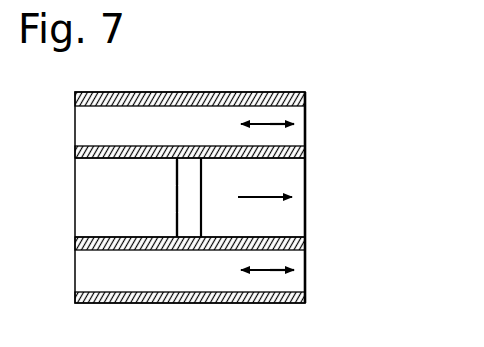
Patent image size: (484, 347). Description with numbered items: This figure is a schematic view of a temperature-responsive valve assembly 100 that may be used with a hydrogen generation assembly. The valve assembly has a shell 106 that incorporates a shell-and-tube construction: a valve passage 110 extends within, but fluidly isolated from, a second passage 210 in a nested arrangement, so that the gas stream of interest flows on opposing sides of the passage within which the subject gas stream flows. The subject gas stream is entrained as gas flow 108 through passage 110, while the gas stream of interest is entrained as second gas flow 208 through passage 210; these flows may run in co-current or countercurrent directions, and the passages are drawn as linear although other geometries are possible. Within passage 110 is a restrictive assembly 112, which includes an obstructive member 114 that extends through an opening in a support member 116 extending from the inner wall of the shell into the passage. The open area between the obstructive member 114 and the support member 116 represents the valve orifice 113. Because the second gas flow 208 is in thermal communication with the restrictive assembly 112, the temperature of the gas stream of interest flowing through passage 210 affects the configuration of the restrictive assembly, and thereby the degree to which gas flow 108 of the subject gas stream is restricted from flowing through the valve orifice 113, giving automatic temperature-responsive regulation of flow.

The temperature-responsive valve assembly 100 is at (319, 64).
The shell 106 is at (228, 89).
The gas flow 108 is at (271, 196).
The valve passage 110 is at (288, 213).
The restrictive assembly 112 is at (175, 213).
The valve orifice 113 is at (188, 185).
The obstructive member 114 is at (188, 210).
The support member 116 is at (186, 228).
The second gas flow 208 is at (268, 127).
The second passage 210 is at (288, 135).